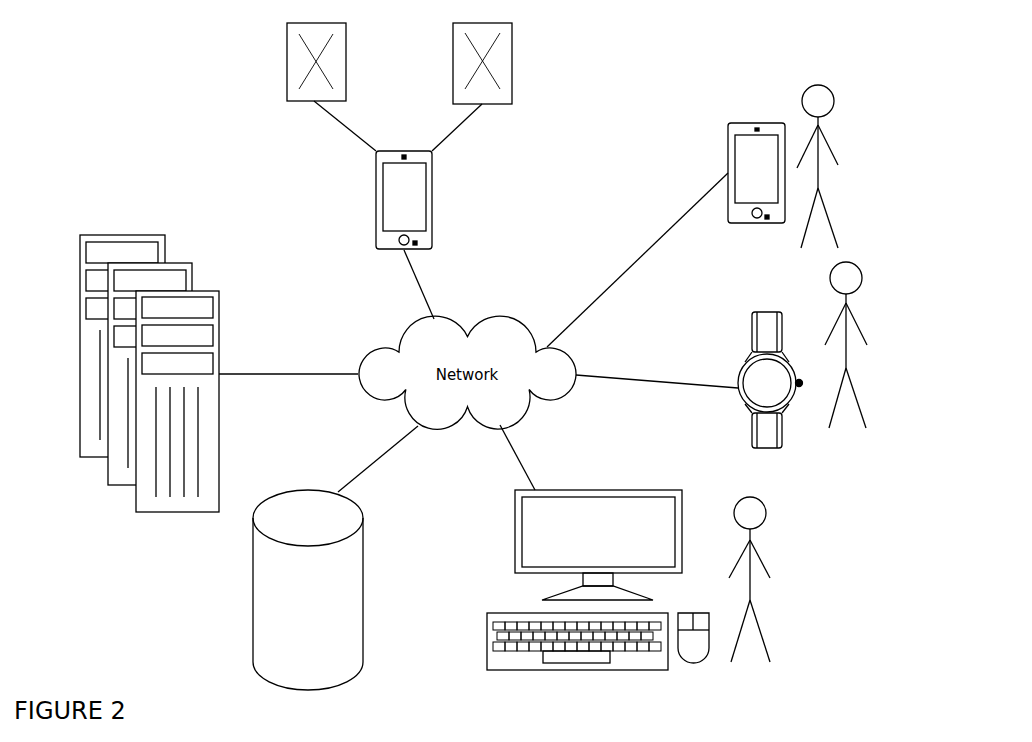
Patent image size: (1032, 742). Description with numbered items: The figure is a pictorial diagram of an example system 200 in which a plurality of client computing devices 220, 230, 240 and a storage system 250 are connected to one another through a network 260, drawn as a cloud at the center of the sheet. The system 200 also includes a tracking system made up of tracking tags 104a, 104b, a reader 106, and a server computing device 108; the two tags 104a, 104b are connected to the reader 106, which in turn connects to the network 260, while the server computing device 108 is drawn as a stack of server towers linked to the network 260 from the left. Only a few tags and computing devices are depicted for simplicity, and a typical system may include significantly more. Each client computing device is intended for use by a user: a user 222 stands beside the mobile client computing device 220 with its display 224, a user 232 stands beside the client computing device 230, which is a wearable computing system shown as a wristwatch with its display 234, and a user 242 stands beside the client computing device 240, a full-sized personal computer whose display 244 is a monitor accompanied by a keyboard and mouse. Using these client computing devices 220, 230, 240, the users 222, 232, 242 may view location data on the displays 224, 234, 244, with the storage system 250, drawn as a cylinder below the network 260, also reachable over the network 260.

The system 200 is at (82, 689).
The tracking tag 104a is at (287, 55).
The tracking tag 104b is at (512, 77).
The reader 106 is at (432, 215).
The server computing device 108 is at (219, 325).
The network 260 is at (365, 392).
The storage system 250 is at (363, 595).
The client computing device 240 is at (620, 551).
The display 244 is at (676, 510).
The user 242 is at (755, 590).
The client computing device 230 is at (739, 404).
The display 234 is at (801, 396).
The user 232 is at (848, 355).
The client computing device 220 is at (720, 182).
The display 224 is at (731, 135).
The user 222 is at (820, 178).